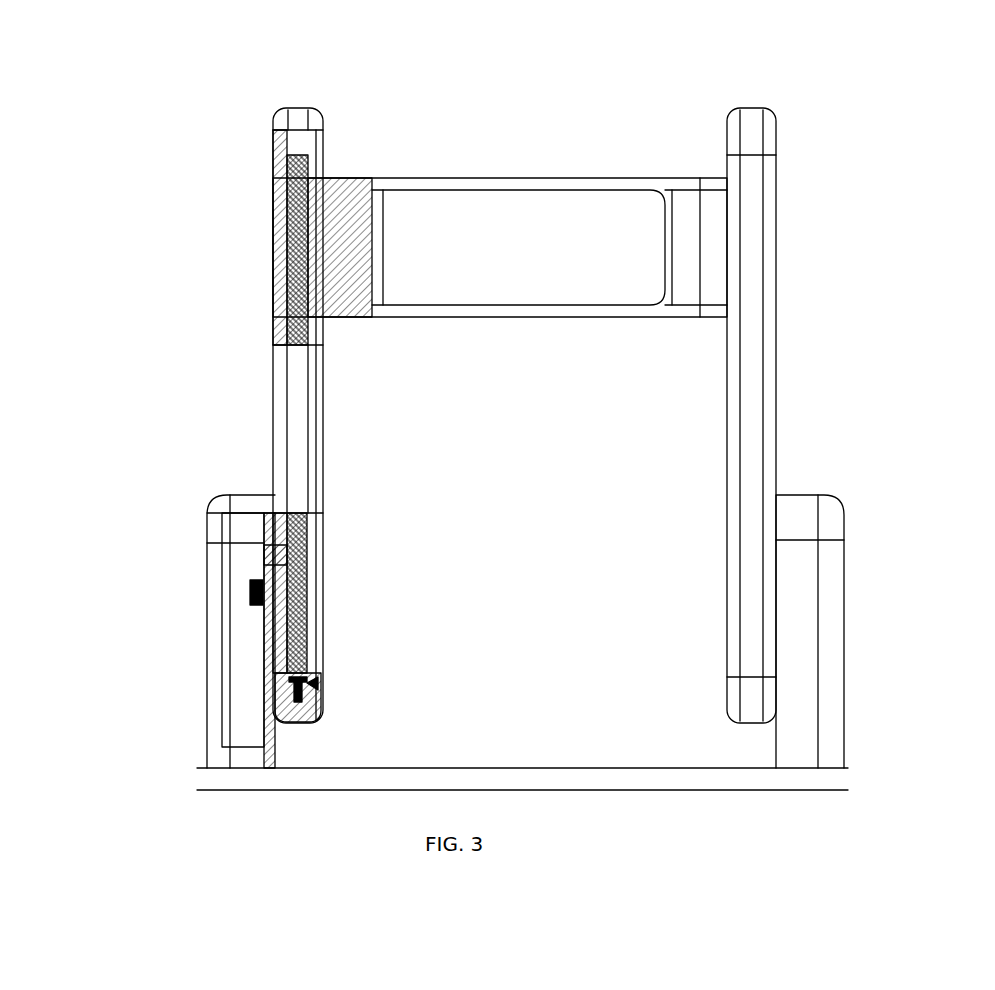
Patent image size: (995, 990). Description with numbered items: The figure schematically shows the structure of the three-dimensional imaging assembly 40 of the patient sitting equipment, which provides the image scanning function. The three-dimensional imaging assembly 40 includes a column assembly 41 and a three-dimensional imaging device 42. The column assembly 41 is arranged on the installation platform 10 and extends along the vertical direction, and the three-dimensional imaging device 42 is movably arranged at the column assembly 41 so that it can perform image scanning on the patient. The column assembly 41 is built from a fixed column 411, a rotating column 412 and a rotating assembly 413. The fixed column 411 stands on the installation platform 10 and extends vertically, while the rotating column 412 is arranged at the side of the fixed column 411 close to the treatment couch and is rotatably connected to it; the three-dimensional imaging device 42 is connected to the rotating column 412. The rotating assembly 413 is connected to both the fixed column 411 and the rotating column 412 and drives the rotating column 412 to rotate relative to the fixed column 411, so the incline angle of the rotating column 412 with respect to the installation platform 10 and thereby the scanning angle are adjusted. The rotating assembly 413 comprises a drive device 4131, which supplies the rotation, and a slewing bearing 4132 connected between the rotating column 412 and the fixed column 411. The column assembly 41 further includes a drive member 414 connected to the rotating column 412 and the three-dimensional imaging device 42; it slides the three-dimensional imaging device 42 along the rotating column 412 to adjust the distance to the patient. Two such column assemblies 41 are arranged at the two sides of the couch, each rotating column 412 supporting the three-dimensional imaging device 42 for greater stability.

The installation platform 10 is at (425, 783).
The 3D imaging assembly 40 is at (762, 77).
The column assembly 41 is at (765, 392).
The 3D imaging device 42 is at (490, 215).
The fixed column 411 is at (248, 665).
The rotating column 412 is at (296, 427).
The rotating assembly 413 is at (181, 580).
The drive member 414 is at (290, 250).
The drive device 4131 is at (250, 595).
The slewing bearing 4132 is at (258, 555).